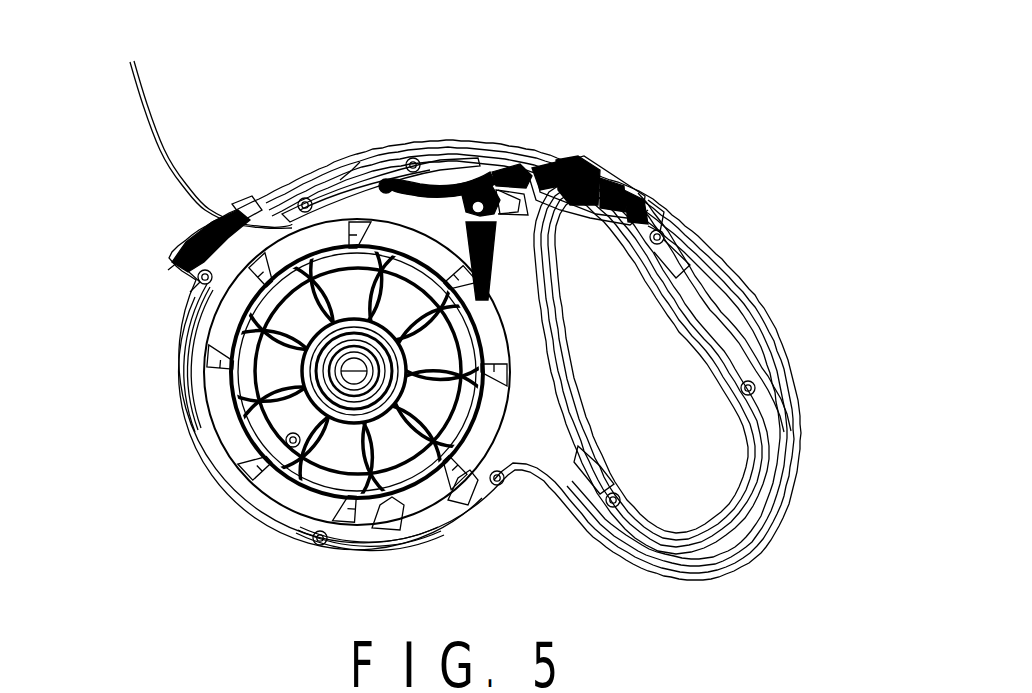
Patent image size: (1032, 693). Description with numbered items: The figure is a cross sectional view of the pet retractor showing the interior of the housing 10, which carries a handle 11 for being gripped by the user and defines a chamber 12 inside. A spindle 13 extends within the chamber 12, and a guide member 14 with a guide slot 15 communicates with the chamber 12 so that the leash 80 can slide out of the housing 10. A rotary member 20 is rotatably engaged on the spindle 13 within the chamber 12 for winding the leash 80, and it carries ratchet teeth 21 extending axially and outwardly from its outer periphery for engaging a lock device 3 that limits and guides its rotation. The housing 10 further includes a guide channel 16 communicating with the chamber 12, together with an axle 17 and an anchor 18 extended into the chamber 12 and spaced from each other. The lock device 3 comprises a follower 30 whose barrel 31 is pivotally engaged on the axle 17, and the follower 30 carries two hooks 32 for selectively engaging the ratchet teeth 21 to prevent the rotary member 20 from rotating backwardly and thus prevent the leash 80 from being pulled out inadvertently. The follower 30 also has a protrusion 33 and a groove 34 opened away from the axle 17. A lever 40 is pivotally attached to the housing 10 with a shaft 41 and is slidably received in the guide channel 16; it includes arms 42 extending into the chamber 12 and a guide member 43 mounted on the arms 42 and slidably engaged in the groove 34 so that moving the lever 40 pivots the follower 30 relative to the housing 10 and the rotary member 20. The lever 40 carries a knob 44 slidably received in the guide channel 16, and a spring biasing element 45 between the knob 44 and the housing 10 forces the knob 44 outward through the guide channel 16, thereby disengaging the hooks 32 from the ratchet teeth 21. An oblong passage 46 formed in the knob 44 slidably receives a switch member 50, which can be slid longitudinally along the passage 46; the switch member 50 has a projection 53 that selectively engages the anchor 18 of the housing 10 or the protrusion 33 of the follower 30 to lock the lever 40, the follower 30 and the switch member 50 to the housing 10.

The lock device 3 is at (568, 97).
The housing 10 is at (262, 536).
The handle 11 is at (780, 380).
The chamber 12 is at (383, 508).
The spindle 13 is at (354, 374).
The guide member 14 is at (198, 232).
The guide slot 15 is at (236, 206).
The guide channel 16 is at (492, 162).
The axle 17 is at (464, 162).
The anchor 18 is at (557, 158).
The rotary member 20 is at (267, 490).
The ratchet teeth 21 is at (200, 356).
The follower 30 is at (365, 174).
The barrel 31 is at (404, 165).
The hooks 32 is at (466, 492).
The protrusion 33 is at (560, 242).
The groove 34 is at (540, 240).
The lever 40 is at (400, 176).
The shaft 41 is at (359, 158).
The arms 42 is at (500, 168).
The guide member 43 is at (600, 232).
The knob 44 is at (632, 200).
The spring biasing element 45 is at (620, 187).
The passage 46 is at (544, 162).
The switch member 50 is at (574, 168).
The projection 53 is at (670, 243).
The leash 80 is at (136, 96).